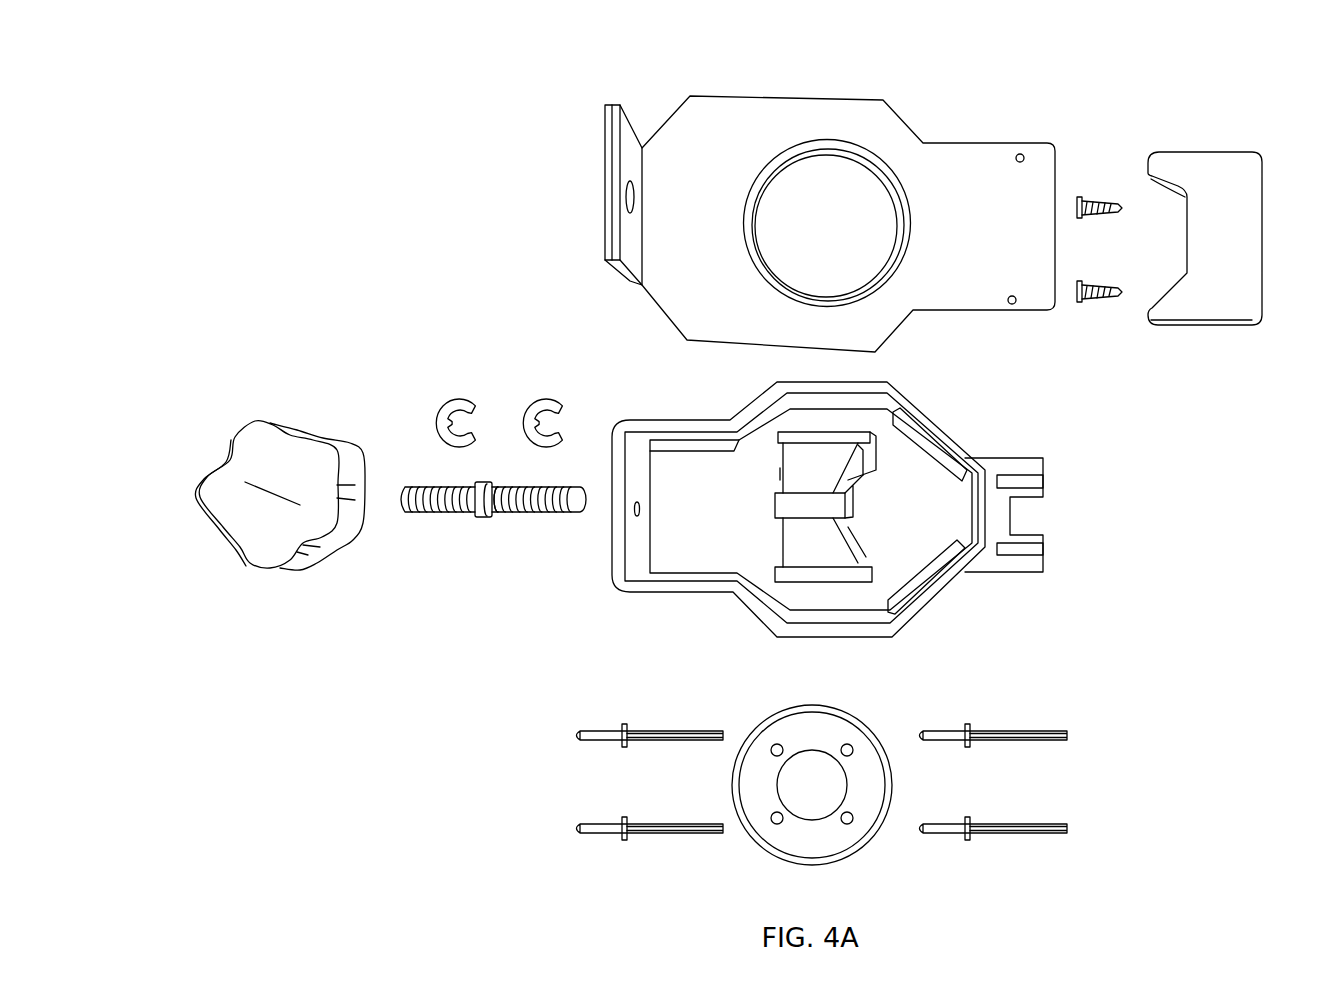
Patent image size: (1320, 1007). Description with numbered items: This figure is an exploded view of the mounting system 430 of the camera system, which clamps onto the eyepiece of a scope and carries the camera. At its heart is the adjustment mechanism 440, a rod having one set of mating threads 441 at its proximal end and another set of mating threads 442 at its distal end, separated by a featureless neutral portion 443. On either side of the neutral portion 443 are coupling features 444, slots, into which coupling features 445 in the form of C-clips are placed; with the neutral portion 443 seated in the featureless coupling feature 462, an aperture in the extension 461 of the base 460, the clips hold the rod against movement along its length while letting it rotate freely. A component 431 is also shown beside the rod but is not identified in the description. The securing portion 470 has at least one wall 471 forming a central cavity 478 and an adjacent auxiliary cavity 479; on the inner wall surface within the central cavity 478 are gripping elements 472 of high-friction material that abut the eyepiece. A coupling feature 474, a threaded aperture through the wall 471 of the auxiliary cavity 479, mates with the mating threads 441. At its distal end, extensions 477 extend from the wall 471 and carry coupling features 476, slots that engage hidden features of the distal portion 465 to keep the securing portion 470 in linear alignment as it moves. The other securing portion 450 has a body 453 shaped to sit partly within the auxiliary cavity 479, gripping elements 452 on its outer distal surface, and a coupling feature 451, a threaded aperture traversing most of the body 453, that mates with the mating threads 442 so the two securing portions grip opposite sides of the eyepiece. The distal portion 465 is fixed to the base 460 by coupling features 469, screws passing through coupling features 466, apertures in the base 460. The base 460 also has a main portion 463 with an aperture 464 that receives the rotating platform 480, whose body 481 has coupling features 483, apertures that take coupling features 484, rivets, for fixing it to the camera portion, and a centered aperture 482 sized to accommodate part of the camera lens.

The mounting system 430 is at (1234, 68).
The knob 431 is at (258, 422).
The adjustment mechanism 440 is at (463, 642).
The mating threads 441 is at (447, 513).
The mating threads 442 is at (515, 513).
The neutral portion 443 is at (472, 515).
The coupling features 444 is at (500, 515).
The coupling features 445 is at (450, 410).
The securing portion 450 is at (800, 430).
The coupling feature 451 is at (787, 508).
The gripping elements 452 is at (863, 476).
The body 453 is at (782, 460).
The base 460 is at (580, 158).
The extension 461 is at (605, 112).
The coupling feature 462 is at (626, 195).
The main portion 463 is at (853, 97).
The aperture 464 is at (863, 192).
The distal portion 465 is at (1180, 341).
The coupling features 466 is at (1020, 152).
The coupling features 469 is at (1096, 198).
The securing portion 470 is at (1050, 628).
The wall 471 is at (745, 607).
The gripping elements 472 is at (915, 597).
The coupling feature 474 is at (640, 520).
The coupling features 476 is at (1045, 482).
The extensions 477 is at (1043, 466).
The central cavity 478 is at (915, 492).
The auxiliary cavity 479 is at (667, 488).
The rotating platform 480 is at (614, 867).
The body 481 is at (772, 857).
The aperture 482 is at (818, 805).
The coupling features 483 is at (850, 751).
The coupling features 484 is at (595, 738).